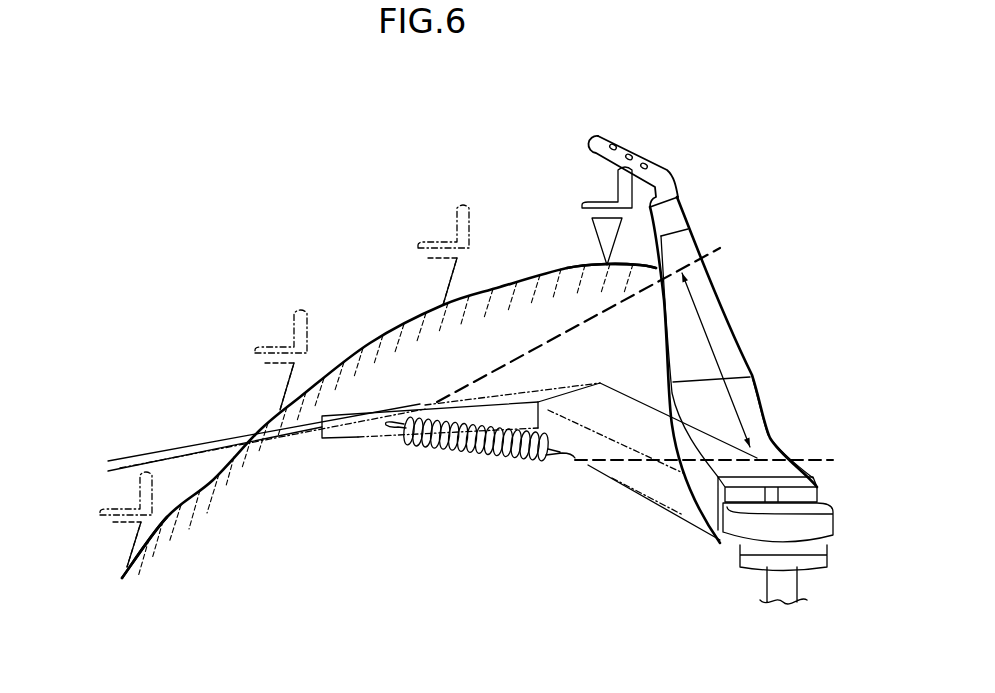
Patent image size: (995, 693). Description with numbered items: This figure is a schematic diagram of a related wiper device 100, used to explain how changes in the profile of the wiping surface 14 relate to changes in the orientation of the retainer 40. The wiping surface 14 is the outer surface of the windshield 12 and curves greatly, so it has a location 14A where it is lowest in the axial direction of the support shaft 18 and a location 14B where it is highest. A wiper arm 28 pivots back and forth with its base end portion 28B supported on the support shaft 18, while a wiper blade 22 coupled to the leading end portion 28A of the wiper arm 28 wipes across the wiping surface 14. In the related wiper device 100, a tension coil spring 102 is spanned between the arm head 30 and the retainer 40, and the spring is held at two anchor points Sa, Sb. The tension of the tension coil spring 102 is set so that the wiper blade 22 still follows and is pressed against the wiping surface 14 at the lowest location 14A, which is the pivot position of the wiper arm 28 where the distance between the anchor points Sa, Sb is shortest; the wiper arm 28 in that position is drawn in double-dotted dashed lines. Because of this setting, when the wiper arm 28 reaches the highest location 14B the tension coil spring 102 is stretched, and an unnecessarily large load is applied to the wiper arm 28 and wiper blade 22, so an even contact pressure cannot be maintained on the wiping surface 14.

The windshield 12 is at (372, 343).
The wiping surface 14 is at (389, 401).
The location where the wiping surface is lowest 14A is at (125, 577).
The location where the wiping surface is highest 14B is at (605, 264).
The support shaft 18 is at (760, 588).
The wiper blade 22 is at (598, 198).
The wiper arm 28 is at (750, 355).
The leading end portion 28A is at (617, 134).
The base end portion 28B is at (833, 527).
The arm head 30 is at (777, 433).
The retainer 40 is at (713, 296).
The related wiper device 100 is at (491, 333).
The tension coil spring 102 is at (461, 484).
The anchor point Sa is at (562, 457).
The anchor point Sb is at (390, 430).